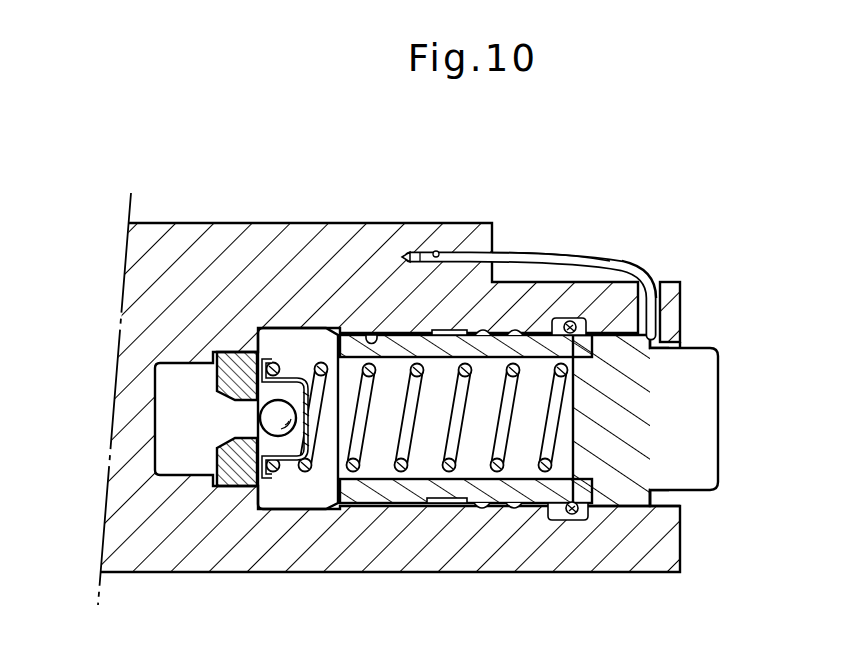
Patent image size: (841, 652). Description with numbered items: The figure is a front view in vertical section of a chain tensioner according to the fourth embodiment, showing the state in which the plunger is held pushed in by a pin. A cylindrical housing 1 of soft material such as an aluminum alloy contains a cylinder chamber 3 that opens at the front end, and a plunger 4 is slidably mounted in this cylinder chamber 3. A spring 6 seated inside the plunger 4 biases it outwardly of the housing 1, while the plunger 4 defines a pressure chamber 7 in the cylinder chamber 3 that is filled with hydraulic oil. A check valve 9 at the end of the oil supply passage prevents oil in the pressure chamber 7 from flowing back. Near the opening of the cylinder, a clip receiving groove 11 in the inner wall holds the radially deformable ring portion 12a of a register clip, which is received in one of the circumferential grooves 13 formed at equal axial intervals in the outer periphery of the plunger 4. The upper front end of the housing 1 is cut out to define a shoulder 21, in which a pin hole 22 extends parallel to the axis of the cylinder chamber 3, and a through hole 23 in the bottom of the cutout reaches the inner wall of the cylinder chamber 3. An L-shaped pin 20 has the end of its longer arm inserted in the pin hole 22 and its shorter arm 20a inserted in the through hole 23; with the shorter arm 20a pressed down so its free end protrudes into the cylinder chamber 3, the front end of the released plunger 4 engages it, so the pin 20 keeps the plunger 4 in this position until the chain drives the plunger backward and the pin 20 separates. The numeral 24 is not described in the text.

The housing 1 is at (220, 223).
The cylinder chamber 3 is at (371, 343).
The plunger 4 is at (707, 404).
The spring 6 is at (401, 468).
The pressure chamber 7 is at (292, 337).
The check valve 9 is at (231, 492).
The clip receiving groove 11 is at (574, 516).
The ring portion 12a is at (573, 322).
The circumferential grooves 13 is at (508, 504).
The L-shaped pin 20 is at (549, 253).
The shorter arm 20a is at (662, 307).
The shoulder 21 is at (494, 251).
The pin hole 22 is at (436, 250).
The through hole 23 is at (664, 264).
The gap 24 is at (656, 499).